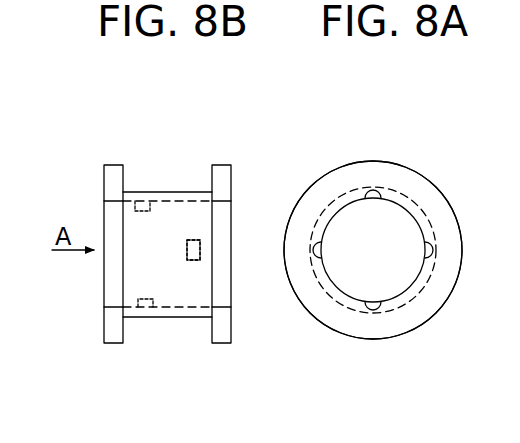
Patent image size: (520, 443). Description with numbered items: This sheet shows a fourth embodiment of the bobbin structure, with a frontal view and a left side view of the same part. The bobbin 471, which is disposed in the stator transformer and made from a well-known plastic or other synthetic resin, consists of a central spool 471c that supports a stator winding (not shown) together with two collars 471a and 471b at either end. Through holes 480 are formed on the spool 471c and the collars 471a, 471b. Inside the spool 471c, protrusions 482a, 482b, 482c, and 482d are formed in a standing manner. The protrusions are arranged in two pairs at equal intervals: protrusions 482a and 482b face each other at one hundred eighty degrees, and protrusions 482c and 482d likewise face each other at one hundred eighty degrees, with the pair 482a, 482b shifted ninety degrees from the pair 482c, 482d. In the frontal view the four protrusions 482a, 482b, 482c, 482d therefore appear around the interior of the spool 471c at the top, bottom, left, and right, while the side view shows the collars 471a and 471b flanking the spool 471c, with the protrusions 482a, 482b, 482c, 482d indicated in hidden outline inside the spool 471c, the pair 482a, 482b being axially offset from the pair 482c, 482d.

In FIG. 8B, the bobbin 471 is at (76, 163).
In FIG. 8B, the collar 471a is at (113, 173).
In FIG. 8A, the collar 471a is at (433, 203).
In FIG. 8B, the collar 471b is at (221, 173).
In FIG. 8B, the spool 471c is at (182, 192).
In FIG. 8A, the spool 471c is at (352, 190).
In FIG. 8B, the through hole 480 is at (99, 219).
In FIG. 8A, the through hole 480 is at (398, 272).
In FIG. 8B, the protrusion 482a is at (143, 196).
In FIG. 8A, the protrusion 482a is at (373, 198).
In FIG. 8B, the protrusion 482b is at (143, 318).
In FIG. 8A, the protrusion 482b is at (375, 302).
In FIG. 8B, the protrusion 482c is at (192, 262).
In FIG. 8A, the protrusion 482c is at (425, 250).
In FIG. 8B, the protrusion 482d is at (193, 250).
In FIG. 8A, the protrusion 482d is at (324, 250).